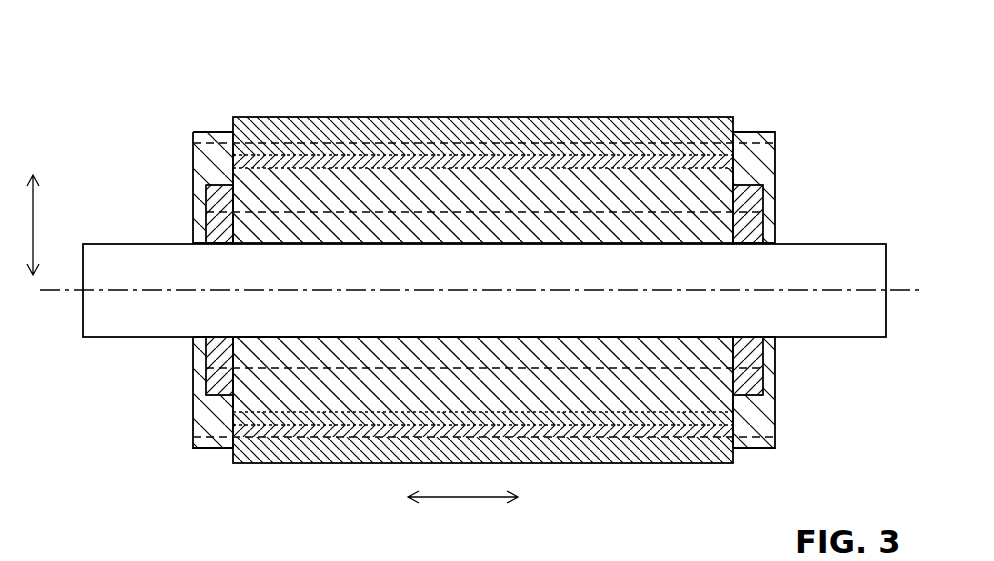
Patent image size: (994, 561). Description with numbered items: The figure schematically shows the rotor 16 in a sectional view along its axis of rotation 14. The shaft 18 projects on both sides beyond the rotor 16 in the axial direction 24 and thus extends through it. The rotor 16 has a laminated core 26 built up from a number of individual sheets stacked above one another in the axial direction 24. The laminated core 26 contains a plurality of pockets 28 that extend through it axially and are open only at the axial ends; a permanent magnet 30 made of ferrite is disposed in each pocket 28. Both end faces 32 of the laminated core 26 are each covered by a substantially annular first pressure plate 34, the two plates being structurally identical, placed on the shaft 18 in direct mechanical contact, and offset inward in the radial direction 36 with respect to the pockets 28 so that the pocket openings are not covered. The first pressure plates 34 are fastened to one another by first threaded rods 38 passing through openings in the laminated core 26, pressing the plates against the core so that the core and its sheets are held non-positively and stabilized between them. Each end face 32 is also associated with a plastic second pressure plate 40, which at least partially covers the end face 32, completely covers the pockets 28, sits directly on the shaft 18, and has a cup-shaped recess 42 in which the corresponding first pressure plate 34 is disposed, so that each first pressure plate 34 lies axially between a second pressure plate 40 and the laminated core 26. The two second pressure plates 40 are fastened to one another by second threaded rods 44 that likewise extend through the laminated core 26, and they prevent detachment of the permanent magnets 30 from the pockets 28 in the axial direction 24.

The axis of rotation 14 is at (908, 292).
The rotor 16 is at (681, 117).
The shaft 18 is at (850, 258).
The axial direction 24 is at (462, 497).
The laminated core 26 is at (304, 117).
The pockets 28 is at (522, 163).
The permanent magnet 30 is at (597, 163).
The end faces 32 is at (230, 176).
The first pressure plate 34 is at (212, 231).
The radial direction 36 is at (33, 226).
The first threaded rods 38 is at (374, 210).
The second pressure plate 40 is at (205, 163).
The cup-shaped recess 42 is at (214, 183).
The second threaded rods 44 is at (465, 150).